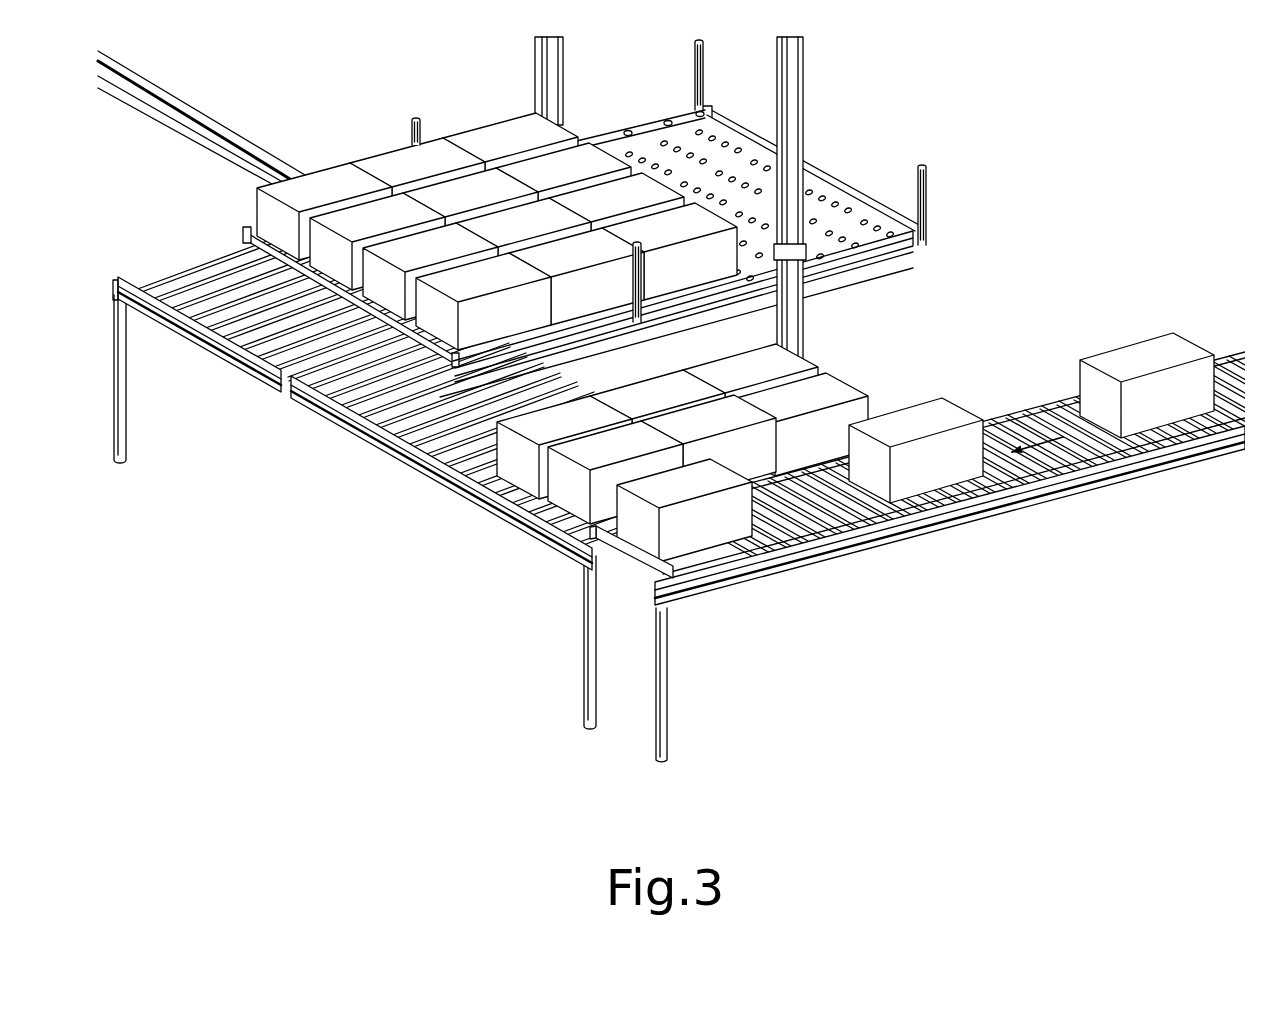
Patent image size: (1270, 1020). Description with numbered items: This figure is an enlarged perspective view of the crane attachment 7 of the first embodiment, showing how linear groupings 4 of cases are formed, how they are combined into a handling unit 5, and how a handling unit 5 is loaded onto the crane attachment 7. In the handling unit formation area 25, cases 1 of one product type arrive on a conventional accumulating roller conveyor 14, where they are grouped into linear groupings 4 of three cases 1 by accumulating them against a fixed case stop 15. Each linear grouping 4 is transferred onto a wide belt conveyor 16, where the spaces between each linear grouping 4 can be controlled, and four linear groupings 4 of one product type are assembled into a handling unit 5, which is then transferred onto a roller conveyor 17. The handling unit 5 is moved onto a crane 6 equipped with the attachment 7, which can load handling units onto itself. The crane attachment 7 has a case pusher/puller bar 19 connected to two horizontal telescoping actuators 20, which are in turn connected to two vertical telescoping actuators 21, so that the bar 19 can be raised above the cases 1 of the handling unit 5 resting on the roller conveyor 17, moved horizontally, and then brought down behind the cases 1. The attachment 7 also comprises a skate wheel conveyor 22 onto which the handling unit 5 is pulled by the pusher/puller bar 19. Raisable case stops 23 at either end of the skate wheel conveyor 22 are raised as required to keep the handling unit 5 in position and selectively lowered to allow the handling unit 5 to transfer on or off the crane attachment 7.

The cases 1 is at (1128, 368).
The linear groupings 4 is at (853, 381).
The handling unit 5 is at (250, 200).
The crane 6 is at (813, 98).
The crane attachment 7 is at (868, 188).
The accumulating roller conveyor 14 is at (1053, 510).
The fixed case stop 15 is at (625, 561).
The wide belt conveyor 16 is at (450, 487).
The roller conveyor 17 is at (310, 410).
The case pusher/puller bar 19 is at (307, 262).
The horizontal telescoping actuators 20 is at (497, 345).
The vertical telescoping actuators 21 is at (693, 88).
The skate wheel conveyor 22 is at (717, 165).
The raisable case stops 23 is at (815, 175).
The handling unit formation area 25 is at (273, 628).